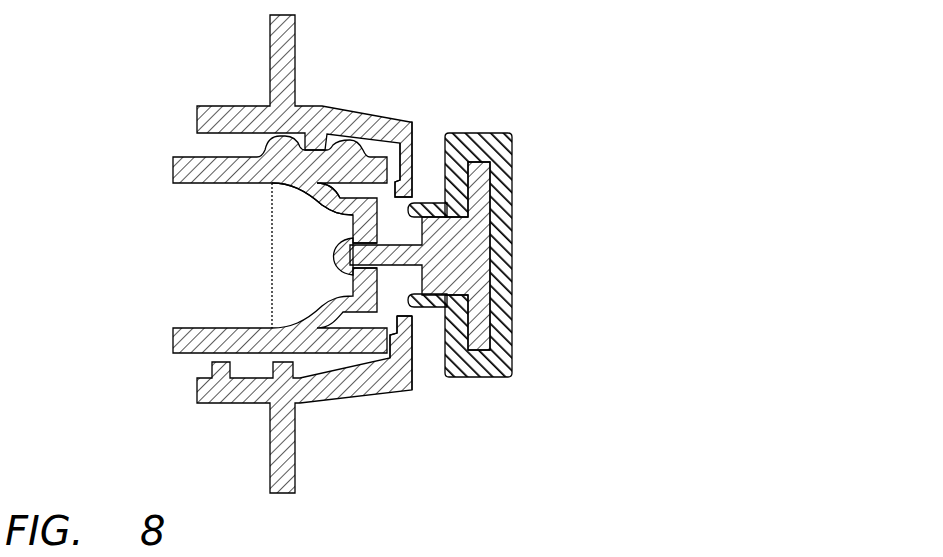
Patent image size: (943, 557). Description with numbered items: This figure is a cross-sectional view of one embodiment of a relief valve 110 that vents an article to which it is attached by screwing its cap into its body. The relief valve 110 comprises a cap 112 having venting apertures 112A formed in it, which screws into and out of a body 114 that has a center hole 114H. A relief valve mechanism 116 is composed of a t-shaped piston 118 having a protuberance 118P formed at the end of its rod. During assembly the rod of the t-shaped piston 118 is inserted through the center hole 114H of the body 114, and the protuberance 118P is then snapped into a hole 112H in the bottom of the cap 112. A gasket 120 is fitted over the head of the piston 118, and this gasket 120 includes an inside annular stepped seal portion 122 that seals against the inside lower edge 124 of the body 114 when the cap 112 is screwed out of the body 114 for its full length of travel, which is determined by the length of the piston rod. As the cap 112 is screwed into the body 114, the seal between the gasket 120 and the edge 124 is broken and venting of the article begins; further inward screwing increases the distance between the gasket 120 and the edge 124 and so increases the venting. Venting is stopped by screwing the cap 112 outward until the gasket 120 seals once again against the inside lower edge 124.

The relief valve 110 is at (700, 100).
The cap 112 is at (195, 354).
The venting apertures 112A is at (338, 197).
The hole in the bottom of the cap 112H is at (357, 257).
The body 114 is at (227, 405).
The center hole 114H is at (395, 293).
The relief valve mechanism 116 is at (565, 220).
The t-shaped piston 118 is at (467, 252).
The protuberance 118P is at (340, 240).
The gasket 120 is at (512, 320).
The inside annular stepped seal portion 122 is at (446, 185).
The inside lower edge 124 is at (411, 147).